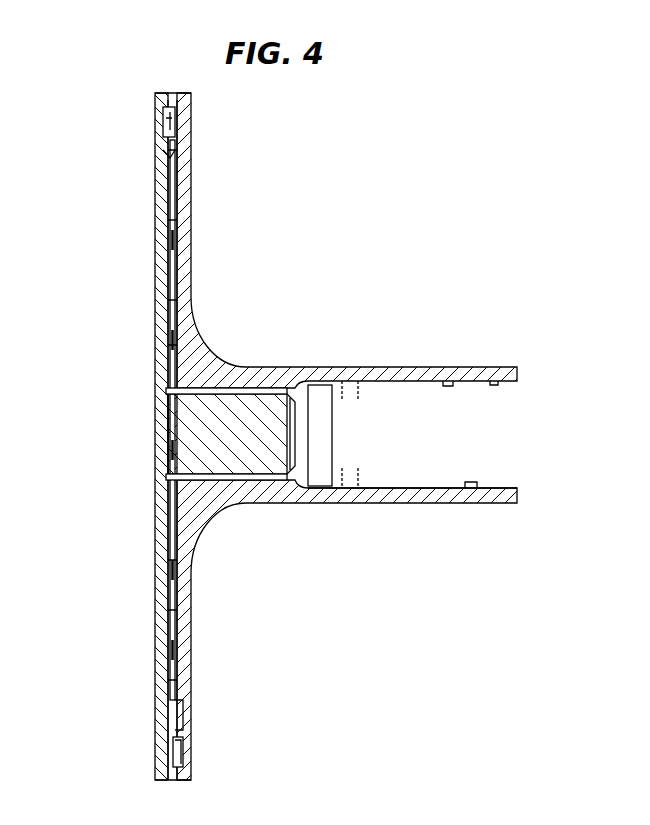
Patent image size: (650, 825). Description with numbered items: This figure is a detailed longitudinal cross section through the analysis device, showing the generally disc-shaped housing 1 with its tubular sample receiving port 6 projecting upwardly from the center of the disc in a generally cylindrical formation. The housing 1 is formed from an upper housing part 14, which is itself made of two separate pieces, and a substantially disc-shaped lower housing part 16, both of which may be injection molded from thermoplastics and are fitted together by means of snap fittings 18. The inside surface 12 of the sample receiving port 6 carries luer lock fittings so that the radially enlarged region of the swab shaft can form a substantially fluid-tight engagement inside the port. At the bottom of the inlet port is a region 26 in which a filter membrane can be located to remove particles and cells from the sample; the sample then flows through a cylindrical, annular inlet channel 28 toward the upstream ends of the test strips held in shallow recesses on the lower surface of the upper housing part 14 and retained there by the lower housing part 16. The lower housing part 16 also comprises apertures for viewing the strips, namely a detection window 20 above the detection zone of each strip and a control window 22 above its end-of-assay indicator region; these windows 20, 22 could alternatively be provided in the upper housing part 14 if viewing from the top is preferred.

The housing 1 is at (285, 436).
The tubular sample receiving port 6 is at (395, 367).
The inside surface of the sample receiving port 12 is at (455, 398).
The upper housing part 14 is at (463, 505).
The lower housing part 16 is at (152, 293).
The snap fittings 18 is at (168, 150).
The detection window 20 is at (158, 237).
The control window 22 is at (158, 190).
The region for filter membrane 26 is at (322, 385).
The inlet channel 28 is at (244, 392).